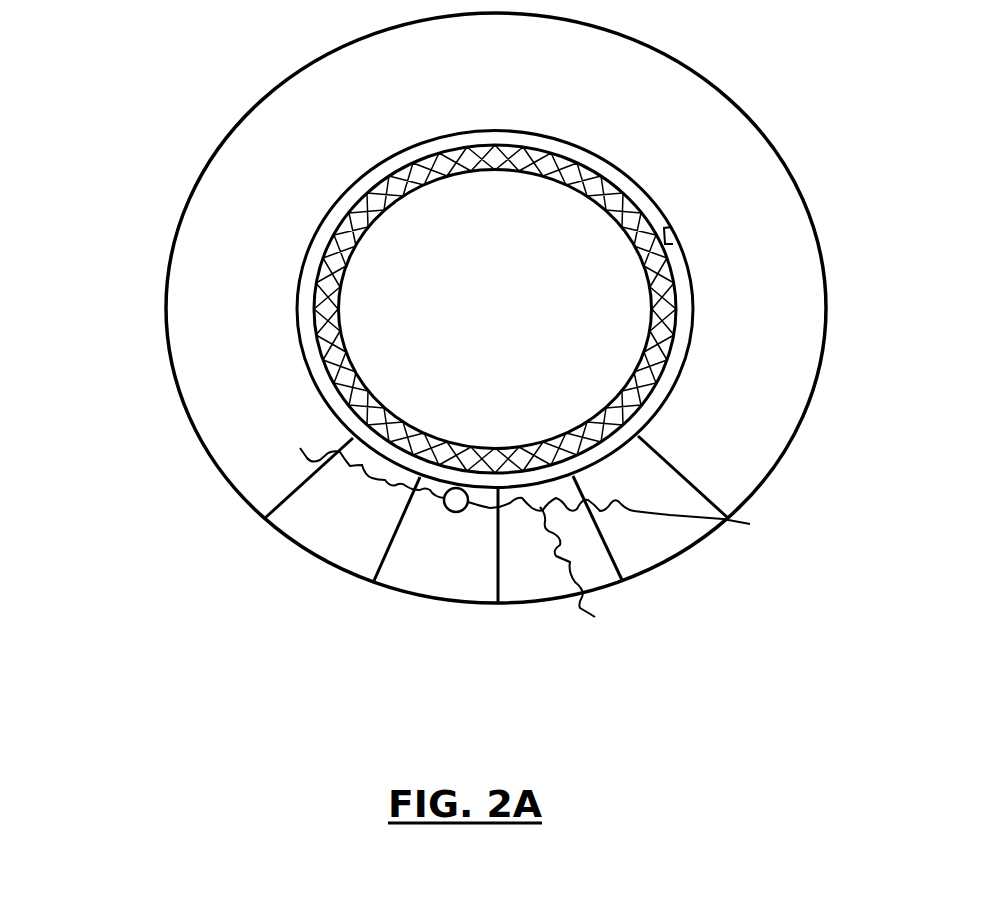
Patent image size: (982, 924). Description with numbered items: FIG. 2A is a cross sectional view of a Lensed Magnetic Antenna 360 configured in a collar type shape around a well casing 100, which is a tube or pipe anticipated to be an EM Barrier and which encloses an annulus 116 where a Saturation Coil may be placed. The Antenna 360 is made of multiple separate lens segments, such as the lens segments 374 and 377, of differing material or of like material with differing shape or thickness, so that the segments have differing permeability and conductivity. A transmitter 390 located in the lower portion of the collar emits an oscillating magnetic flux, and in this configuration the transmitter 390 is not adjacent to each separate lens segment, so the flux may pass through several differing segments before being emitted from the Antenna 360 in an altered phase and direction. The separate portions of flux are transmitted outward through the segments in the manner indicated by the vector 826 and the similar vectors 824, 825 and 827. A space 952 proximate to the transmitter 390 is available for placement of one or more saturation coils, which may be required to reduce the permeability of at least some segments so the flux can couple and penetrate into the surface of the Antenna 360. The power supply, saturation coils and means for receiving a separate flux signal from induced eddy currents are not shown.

The Lensed Magnetic Antenna 360 is at (727, 58).
The well casing 100 is at (350, 357).
The annulus 116 is at (519, 301).
The space 952 is at (669, 233).
The lens segment 374 is at (295, 533).
The lens segment 377 is at (662, 532).
The transmitter 390 is at (464, 490).
The light ray direction 824 is at (300, 448).
The light ray direction 825 is at (453, 512).
The vector 826 is at (595, 617).
The light ray direction 827 is at (750, 524).